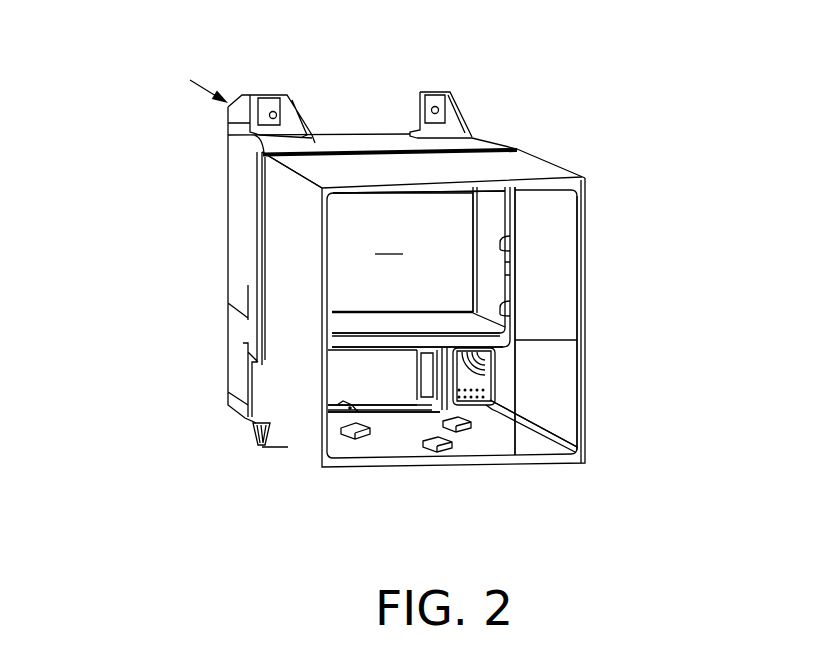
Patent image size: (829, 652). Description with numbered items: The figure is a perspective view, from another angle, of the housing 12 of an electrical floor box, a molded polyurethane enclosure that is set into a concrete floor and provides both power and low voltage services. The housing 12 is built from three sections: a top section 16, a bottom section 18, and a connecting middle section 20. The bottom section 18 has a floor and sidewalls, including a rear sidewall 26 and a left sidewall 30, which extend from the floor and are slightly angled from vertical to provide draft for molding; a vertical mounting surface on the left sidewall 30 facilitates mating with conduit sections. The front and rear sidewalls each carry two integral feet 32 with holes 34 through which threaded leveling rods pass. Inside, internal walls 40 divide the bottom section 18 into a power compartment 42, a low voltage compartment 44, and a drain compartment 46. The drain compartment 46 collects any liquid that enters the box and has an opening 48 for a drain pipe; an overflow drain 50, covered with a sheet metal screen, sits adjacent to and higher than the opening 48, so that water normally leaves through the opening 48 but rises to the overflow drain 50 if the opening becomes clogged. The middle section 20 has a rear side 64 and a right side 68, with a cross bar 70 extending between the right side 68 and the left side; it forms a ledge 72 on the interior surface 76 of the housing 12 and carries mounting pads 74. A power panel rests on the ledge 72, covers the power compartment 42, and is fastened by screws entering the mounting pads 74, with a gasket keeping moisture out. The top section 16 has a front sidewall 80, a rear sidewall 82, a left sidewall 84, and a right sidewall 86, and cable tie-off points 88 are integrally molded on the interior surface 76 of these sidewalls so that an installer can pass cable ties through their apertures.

The housing 12 is at (193, 81).
The top section 16 is at (280, 187).
The bottom section 18 is at (247, 287).
The middle section 20 is at (266, 262).
The rear sidewall 26 is at (352, 143).
The left sidewall 30 is at (500, 195).
The feet 32 is at (268, 92).
The holes 34 is at (273, 111).
The internal walls 40 is at (515, 297).
The power compartment 42 is at (333, 270).
The low voltage compartment 44 is at (322, 361).
The drain compartment 46 is at (496, 382).
The opening 48 is at (470, 353).
The overflow drain 50 is at (550, 428).
The rear side 64 is at (520, 148).
The right side 68 is at (497, 205).
The cross bar 70 is at (428, 337).
The ledge 72 is at (513, 320).
The mounting pads 74 is at (510, 243).
The interior surface 76 is at (520, 338).
The front sidewall 80 is at (462, 460).
The rear sidewall 82 is at (397, 190).
The left sidewall 84 is at (307, 233).
The right sidewall 86 is at (513, 277).
The cable tie-off points 88 is at (424, 452).